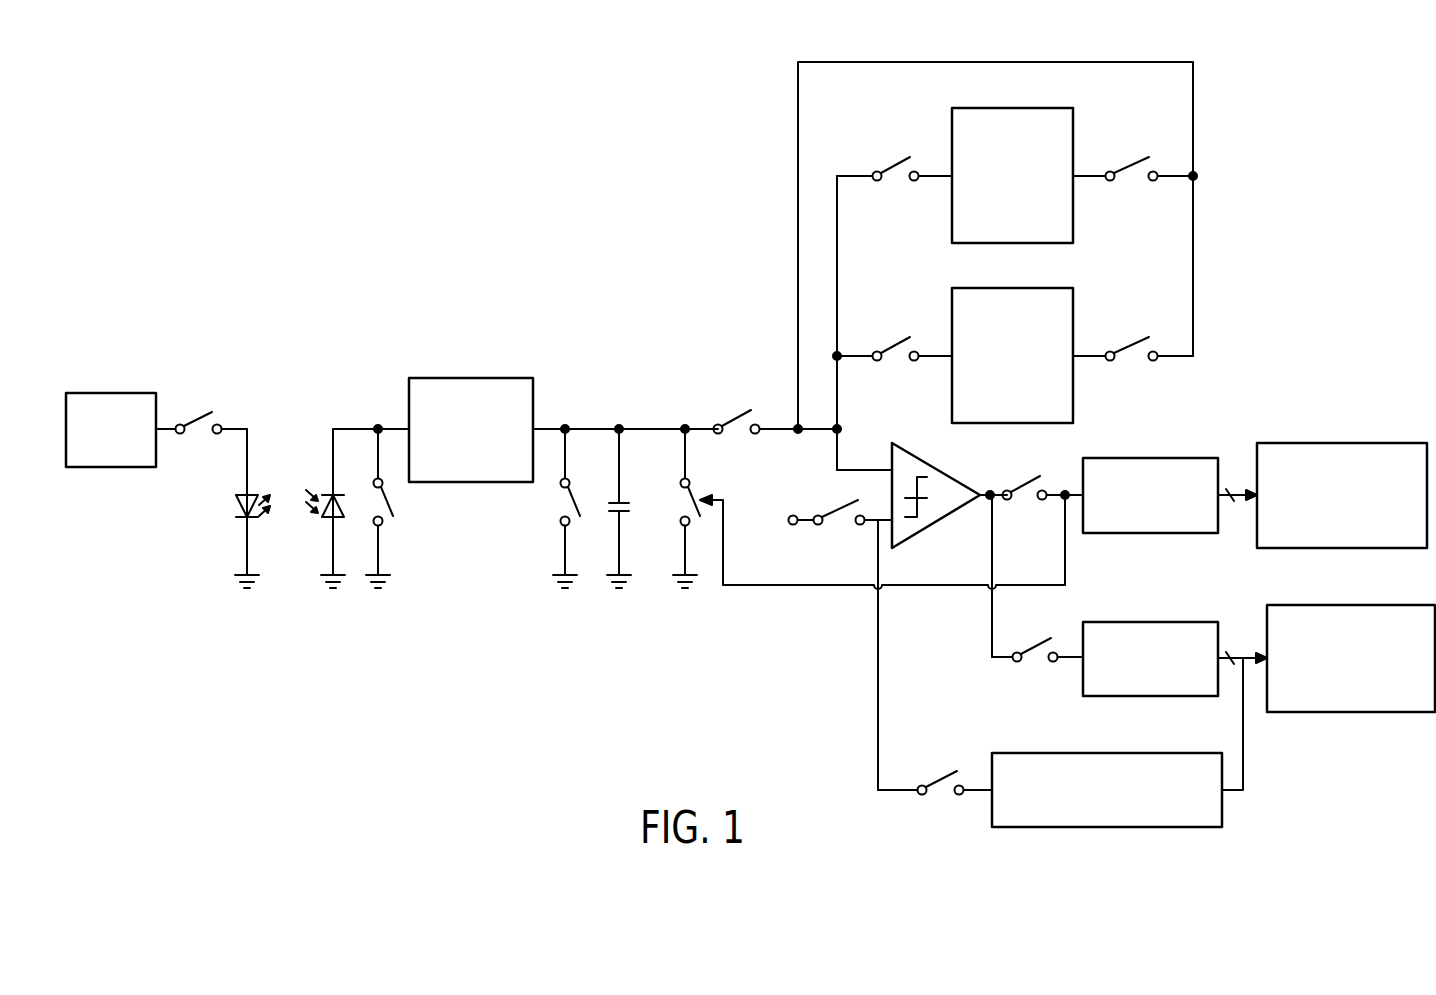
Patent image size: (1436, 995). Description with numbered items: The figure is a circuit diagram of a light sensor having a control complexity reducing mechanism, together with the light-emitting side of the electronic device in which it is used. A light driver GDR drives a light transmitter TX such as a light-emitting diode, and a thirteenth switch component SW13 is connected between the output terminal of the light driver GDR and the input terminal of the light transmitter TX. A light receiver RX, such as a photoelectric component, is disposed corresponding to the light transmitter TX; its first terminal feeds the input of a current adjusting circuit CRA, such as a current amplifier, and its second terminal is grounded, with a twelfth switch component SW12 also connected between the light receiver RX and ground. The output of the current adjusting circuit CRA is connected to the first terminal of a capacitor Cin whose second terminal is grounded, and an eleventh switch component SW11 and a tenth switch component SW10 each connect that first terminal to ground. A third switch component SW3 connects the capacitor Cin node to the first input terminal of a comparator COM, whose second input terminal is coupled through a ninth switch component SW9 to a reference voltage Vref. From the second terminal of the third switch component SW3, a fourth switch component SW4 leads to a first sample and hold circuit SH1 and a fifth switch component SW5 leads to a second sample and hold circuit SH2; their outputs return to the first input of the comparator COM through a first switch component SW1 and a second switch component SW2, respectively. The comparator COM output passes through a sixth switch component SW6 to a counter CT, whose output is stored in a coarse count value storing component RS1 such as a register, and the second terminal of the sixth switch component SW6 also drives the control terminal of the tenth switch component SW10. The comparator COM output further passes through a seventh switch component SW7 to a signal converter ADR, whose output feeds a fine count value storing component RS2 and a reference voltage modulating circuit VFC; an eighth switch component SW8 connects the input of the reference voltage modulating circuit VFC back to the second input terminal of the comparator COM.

The light driver GDR is at (135, 393).
The thirteenth switch component SW13 is at (201, 407).
The light transmitter TX is at (237, 508).
The light receiver RX is at (334, 508).
The twelfth switch component SW12 is at (409, 506).
The current adjusting circuit CRA is at (477, 378).
The eleventh switch component SW11 is at (536, 506).
The capacitor Cin is at (643, 506).
The tenth switch component SW10 is at (720, 506).
The third switch component SW3 is at (775, 407).
The reference voltage Vref is at (882, 542).
The ninth switch component SW9 is at (852, 645).
The comparator COM is at (942, 518).
The fourth switch component SW4 is at (894, 153).
The first sample and hold circuit SH1 is at (1005, 108).
The first switch component SW1 is at (1133, 153).
The fifth switch component SW5 is at (894, 334).
The second sample and hold circuit SH2 is at (1005, 288).
The second switch component SW2 is at (1133, 334).
The sixth switch component SW6 is at (1034, 473).
The counter CT is at (1152, 458).
The coarse count value storing component RS1 is at (1314, 443).
The seventh switch component SW7 is at (1037, 578).
The signal converter ADR is at (1152, 622).
The fine count value storing component RS2 is at (1324, 605).
The eighth switch component SW8 is at (935, 769).
The reference voltage modulating circuit VFC is at (1060, 753).